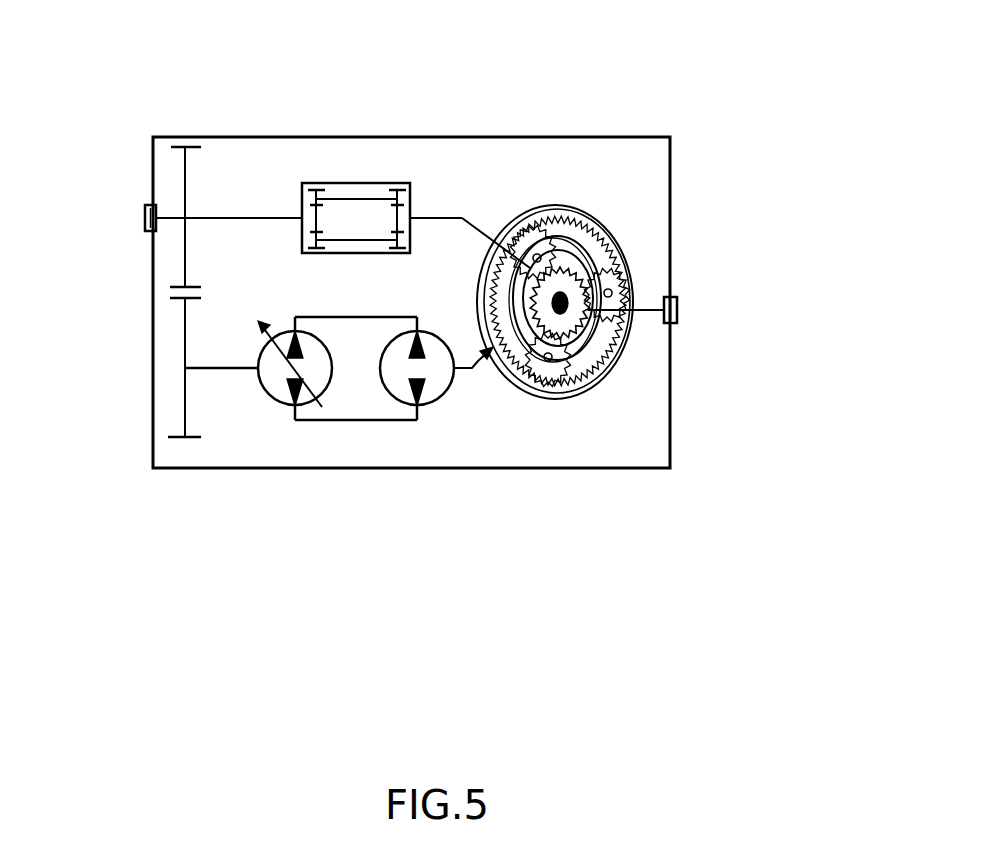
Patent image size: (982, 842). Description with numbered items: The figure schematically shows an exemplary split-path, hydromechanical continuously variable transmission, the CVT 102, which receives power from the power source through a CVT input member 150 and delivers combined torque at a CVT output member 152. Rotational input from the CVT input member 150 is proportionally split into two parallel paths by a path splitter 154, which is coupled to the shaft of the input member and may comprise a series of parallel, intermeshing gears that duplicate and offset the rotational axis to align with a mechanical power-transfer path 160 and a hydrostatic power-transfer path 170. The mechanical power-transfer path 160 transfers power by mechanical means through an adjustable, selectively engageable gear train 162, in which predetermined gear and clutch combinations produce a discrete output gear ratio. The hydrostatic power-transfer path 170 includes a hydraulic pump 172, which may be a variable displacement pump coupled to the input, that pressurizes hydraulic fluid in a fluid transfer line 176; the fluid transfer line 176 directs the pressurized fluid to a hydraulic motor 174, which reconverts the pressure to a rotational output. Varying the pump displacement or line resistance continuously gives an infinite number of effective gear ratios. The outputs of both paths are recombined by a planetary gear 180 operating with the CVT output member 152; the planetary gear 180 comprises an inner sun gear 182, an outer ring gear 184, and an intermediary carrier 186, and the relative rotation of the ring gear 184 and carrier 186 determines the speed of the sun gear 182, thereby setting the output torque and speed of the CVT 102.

The transmission 102 is at (712, 91).
The CVT input member 150 is at (157, 224).
The CVT output member 152 is at (672, 323).
The path splitter 154 is at (187, 180).
The mechanical power-transfer path 160 is at (417, 201).
The gear train 162 is at (352, 199).
The hydrostatic power-transfer path 170 is at (430, 426).
The hydraulic pump 172 is at (310, 330).
The hydraulic motor 174 is at (386, 388).
The fluid transfer line 176 is at (375, 318).
The planetary gear 180 is at (603, 217).
The sun gear 182 is at (559, 283).
The ring gear 184 is at (586, 393).
The carrier 186 is at (604, 340).